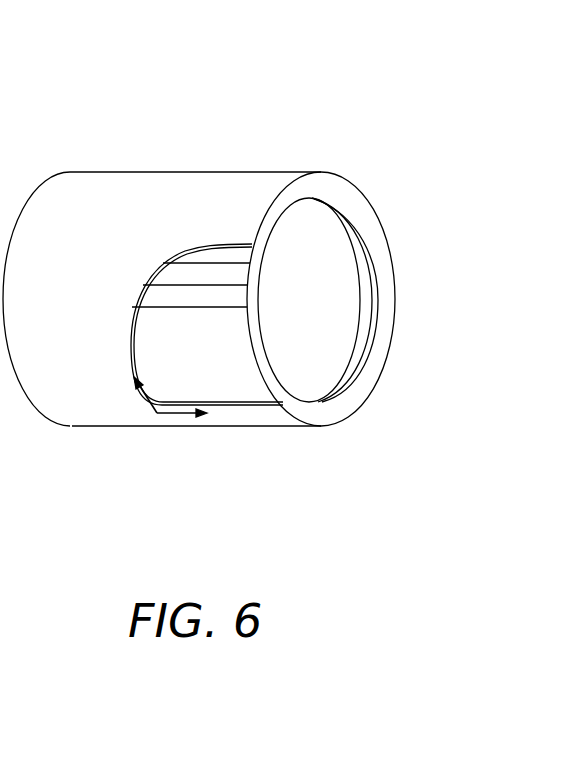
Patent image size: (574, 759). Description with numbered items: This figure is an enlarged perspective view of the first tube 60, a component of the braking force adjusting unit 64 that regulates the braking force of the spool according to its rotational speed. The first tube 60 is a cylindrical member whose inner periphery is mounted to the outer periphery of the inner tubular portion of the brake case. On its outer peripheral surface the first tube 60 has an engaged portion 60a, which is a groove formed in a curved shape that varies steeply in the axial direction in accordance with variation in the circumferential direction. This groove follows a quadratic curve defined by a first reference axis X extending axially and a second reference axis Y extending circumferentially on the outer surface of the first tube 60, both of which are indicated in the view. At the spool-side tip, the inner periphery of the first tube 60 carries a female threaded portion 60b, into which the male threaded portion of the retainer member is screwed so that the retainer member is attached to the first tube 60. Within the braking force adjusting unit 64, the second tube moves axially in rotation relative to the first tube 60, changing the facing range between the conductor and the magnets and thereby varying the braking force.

The first tube 60 is at (276, 140).
The engaged portion 60a is at (236, 378).
The female threaded portion 60b is at (343, 212).
The braking force adjusting unit 64 is at (328, 487).